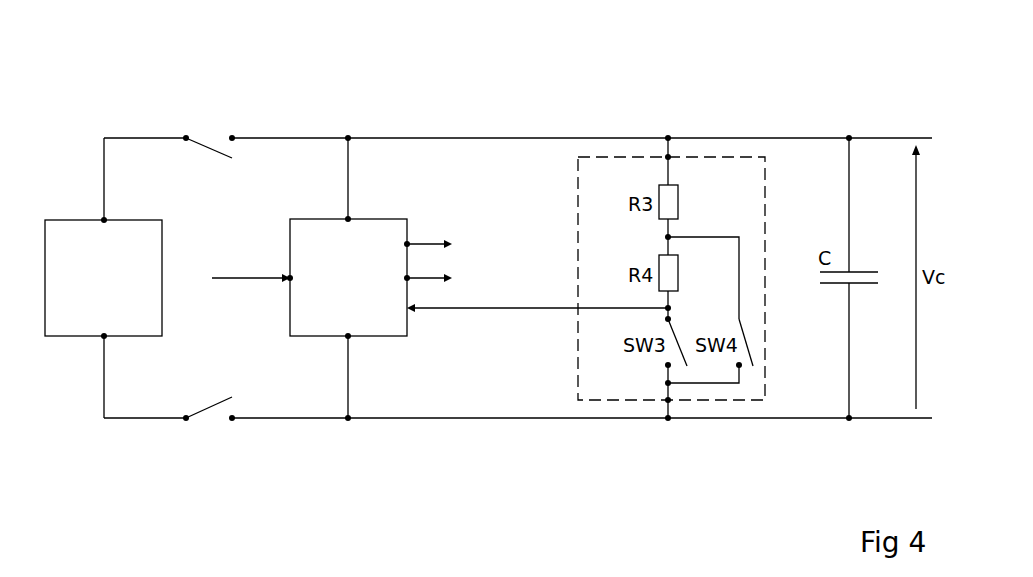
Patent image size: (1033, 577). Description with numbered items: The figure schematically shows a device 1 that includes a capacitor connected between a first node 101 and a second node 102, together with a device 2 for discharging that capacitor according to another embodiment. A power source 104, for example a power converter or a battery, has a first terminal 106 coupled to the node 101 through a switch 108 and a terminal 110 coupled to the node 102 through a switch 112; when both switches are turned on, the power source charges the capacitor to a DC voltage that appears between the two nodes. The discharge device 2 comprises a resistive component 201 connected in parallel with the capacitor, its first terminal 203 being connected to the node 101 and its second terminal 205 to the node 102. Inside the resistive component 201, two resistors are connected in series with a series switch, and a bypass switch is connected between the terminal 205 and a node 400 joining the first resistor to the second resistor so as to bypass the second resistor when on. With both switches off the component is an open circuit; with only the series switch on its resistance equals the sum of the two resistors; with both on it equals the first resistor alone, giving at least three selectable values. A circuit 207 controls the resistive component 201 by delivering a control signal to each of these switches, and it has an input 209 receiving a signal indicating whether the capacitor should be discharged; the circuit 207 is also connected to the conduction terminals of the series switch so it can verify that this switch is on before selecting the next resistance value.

The device 1 is at (116, 102).
The device of discharge 2 is at (522, 157).
The node 101 is at (850, 138).
The node 102 is at (849, 421).
The power source 104 is at (103, 278).
The first terminal 106 is at (103, 218).
The switch 108 is at (208, 140).
The terminal 110 is at (100, 339).
The switch 112 is at (212, 415).
The resistive component 201 is at (739, 157).
The first terminal 203 is at (668, 157).
The second terminal 205 is at (668, 401).
The circuit 207 is at (479, 278).
The input 209 is at (288, 276).
The node 400 is at (668, 237).